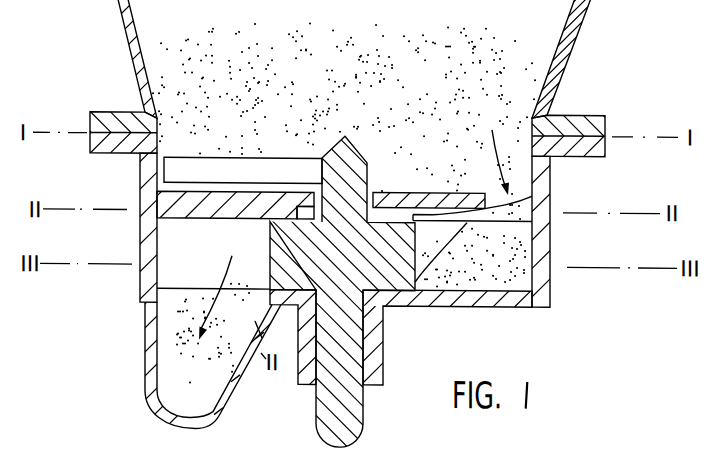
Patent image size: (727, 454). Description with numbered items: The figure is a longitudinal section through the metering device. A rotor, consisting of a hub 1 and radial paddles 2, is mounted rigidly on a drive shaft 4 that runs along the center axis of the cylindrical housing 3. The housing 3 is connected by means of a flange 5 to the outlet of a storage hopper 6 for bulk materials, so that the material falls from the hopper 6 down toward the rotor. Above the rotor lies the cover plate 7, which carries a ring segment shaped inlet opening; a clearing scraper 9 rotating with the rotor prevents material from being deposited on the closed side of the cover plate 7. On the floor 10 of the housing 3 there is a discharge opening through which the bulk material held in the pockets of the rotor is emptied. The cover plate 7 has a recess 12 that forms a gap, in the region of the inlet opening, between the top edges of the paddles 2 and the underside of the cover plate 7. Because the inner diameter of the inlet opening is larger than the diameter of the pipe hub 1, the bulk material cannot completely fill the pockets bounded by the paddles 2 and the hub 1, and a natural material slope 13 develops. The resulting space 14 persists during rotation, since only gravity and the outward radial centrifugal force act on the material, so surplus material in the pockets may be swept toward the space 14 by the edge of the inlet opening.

The hub 1 is at (396, 288).
The radial paddles 2 is at (172, 255).
The cylindrical housing 3 is at (548, 268).
The drive shaft 4 is at (355, 408).
The flange 5 is at (600, 133).
The storage hopper 6 is at (584, 2).
The cover plate 7 is at (160, 203).
The clearing scraper 9 is at (174, 173).
The floor 10 is at (492, 296).
The recess 12 is at (533, 193).
The natural material slope 13 is at (455, 243).
The space 14 is at (427, 245).